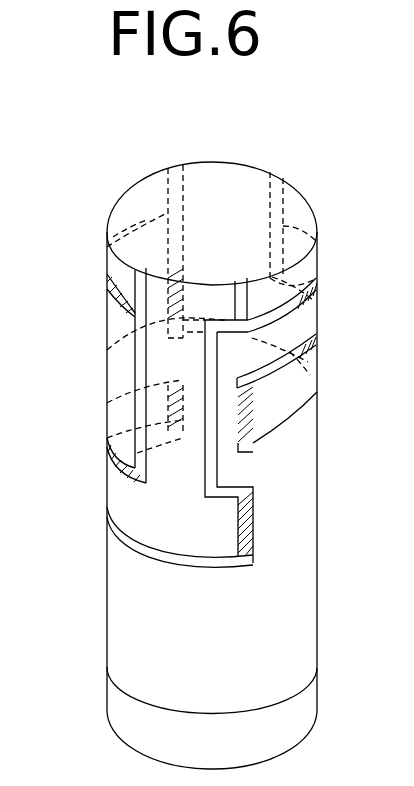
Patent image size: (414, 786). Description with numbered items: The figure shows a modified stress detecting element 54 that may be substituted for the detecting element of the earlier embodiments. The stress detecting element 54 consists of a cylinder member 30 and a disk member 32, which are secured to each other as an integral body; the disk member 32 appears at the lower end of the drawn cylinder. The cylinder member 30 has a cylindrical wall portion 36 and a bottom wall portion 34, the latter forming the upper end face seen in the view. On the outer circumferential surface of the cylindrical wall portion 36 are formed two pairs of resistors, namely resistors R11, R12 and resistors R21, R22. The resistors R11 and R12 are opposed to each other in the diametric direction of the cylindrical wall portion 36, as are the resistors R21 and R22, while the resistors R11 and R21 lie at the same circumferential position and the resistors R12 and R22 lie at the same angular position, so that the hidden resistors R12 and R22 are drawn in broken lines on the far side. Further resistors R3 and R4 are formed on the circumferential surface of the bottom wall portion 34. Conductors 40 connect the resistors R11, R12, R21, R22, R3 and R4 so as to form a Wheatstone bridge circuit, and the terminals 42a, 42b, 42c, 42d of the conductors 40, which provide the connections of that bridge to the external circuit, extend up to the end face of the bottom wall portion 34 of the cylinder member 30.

The bottom wall portion 34 is at (202, 172).
The cylindrical wall portion 36 is at (125, 630).
The disk member 32 is at (305, 697).
The conductors 40 is at (133, 543).
The terminal 42a is at (243, 282).
The terminal 42b is at (107, 269).
The terminal 42c is at (280, 170).
The terminal 42d is at (173, 162).
The resistor R3 is at (118, 302).
The resistor R4 is at (290, 323).
The resistor R11 is at (290, 518).
The resistor R12 is at (107, 440).
The resistor R21 is at (290, 397).
The resistor R22 is at (107, 349).
The stress detecting element 54 is at (352, 177).
The cylinder member 30 is at (331, 590).